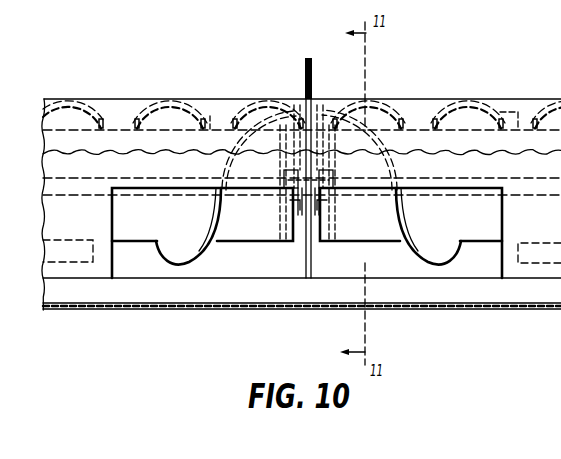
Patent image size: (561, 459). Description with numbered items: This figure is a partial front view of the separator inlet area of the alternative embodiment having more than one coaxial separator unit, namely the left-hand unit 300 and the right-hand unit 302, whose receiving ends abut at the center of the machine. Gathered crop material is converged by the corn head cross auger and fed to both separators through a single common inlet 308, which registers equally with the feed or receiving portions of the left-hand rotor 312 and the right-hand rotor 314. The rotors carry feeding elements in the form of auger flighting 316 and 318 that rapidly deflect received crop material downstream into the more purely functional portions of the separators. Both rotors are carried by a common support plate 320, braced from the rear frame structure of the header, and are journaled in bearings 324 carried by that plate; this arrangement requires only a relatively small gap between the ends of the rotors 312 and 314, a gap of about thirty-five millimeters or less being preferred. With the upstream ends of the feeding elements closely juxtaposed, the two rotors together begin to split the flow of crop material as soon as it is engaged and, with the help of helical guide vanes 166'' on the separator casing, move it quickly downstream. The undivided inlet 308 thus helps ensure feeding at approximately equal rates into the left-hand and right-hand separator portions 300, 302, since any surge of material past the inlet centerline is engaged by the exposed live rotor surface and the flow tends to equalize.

The left-hand separator unit 300 is at (476, 95).
The guide vanes 166'' is at (75, 89).
The right-hand separator unit 302 is at (178, 89).
The support plate 320 is at (312, 64).
The right-hand rotor 314 is at (139, 252).
The left-hand rotor 312 is at (483, 255).
The auger flighting 318 is at (209, 247).
The auger flighting 316 is at (447, 263).
The single common inlet 308 is at (384, 259).
The bearings 324 is at (312, 246).